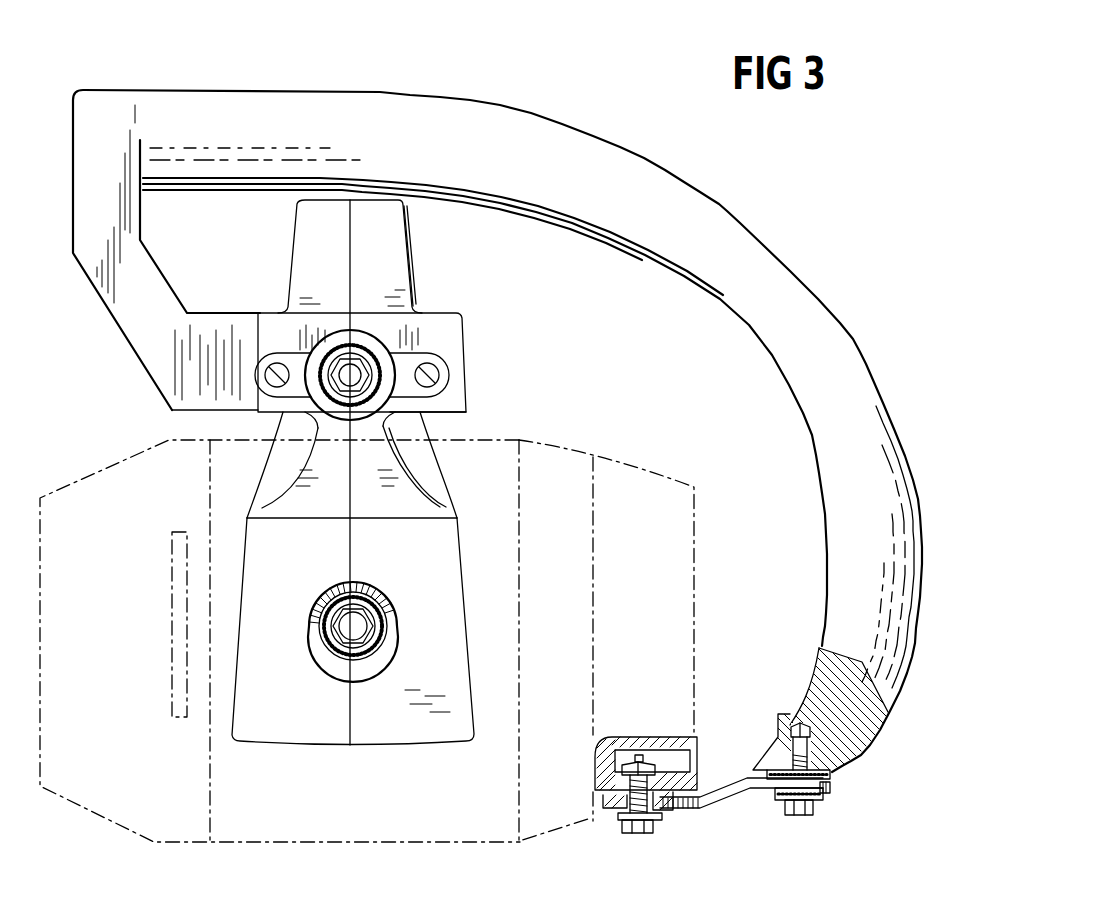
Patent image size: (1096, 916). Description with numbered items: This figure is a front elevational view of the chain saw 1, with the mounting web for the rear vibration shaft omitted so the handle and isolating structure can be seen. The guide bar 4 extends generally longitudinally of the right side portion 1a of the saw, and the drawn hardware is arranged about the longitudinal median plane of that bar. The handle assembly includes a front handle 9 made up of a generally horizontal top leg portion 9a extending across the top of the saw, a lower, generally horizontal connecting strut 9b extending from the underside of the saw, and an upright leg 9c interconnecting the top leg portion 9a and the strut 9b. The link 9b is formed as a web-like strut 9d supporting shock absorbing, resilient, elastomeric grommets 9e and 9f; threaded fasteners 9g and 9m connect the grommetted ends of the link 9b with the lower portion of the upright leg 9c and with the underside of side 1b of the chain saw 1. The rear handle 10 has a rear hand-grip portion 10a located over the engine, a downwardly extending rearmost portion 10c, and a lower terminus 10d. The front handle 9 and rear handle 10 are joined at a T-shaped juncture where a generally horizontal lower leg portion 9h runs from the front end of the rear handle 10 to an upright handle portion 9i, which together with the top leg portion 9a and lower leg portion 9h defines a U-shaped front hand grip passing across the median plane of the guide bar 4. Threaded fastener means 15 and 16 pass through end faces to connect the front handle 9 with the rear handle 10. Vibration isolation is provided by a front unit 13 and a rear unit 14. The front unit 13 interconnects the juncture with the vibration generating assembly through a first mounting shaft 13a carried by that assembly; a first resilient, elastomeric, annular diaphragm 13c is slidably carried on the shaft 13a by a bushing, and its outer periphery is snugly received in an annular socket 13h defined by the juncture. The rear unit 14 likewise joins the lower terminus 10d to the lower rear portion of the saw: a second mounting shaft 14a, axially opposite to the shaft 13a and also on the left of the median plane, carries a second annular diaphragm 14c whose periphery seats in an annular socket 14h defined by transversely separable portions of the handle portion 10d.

The chain saw 1 is at (555, 84).
The right side portion 1a is at (165, 845).
The side of chain saw 1b is at (527, 843).
The guide bar 4 is at (163, 606).
The front handle 9 is at (396, 88).
The top leg portion 9a is at (167, 98).
The lower connecting strut 9b is at (708, 809).
The upright leg 9c is at (760, 240).
The web-like strut 9d is at (700, 790).
The elastomeric grommet 9e is at (826, 796).
The elastomeric grommet 9f is at (665, 816).
The threaded fastener 9g is at (800, 816).
The lower leg portion 9h is at (193, 383).
The upright handle portion 9i is at (108, 220).
The threaded fastener 9m is at (633, 834).
The rear handle 10 is at (416, 262).
The rear hand-grip portion 10a is at (407, 223).
The rearmost portion 10c is at (418, 452).
The lower terminus 10d is at (452, 696).
The front vibration isolating unit 13 is at (395, 332).
The first mounting shaft means 13a is at (430, 416).
The first annular diaphragm means 13c is at (386, 382).
The annular socket 13h is at (302, 412).
The rear vibration isolating unit 14 is at (372, 562).
The second mounting shaft means 14a is at (362, 628).
The second annular diaphragm means 14c is at (384, 646).
The annular socket 14h is at (386, 600).
The threaded fastener means 15 is at (440, 368).
The threaded fastener means 16 is at (262, 350).